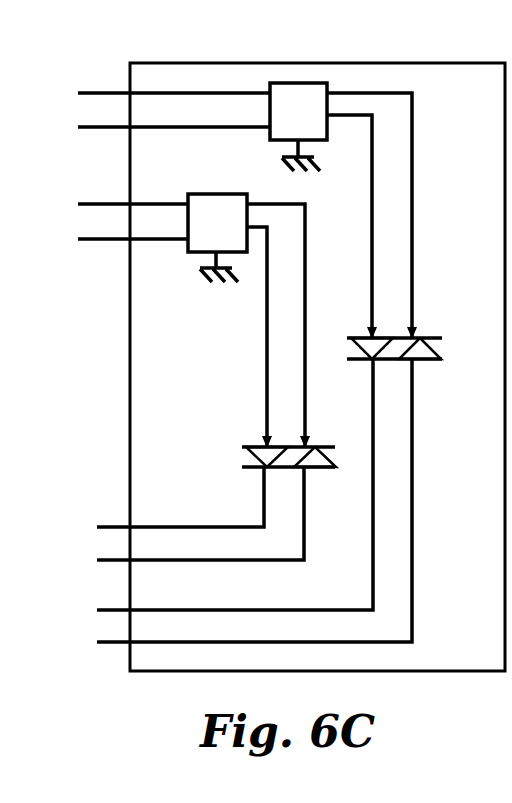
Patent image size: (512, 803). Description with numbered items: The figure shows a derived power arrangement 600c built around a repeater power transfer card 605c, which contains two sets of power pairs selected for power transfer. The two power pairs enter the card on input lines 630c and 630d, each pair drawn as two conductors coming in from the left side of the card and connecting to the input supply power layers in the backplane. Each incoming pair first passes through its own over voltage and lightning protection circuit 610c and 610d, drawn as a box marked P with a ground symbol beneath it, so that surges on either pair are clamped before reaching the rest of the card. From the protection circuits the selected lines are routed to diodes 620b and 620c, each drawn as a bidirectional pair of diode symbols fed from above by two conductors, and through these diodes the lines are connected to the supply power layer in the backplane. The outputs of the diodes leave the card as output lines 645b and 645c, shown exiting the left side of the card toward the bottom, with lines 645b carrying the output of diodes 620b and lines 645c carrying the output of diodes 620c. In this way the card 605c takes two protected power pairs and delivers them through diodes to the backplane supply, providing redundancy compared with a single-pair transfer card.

The power converter circuit 600c is at (184, 53).
The repeater power transfer card 605c is at (370, 62).
The over voltage and lightning protection circuit 610c is at (266, 140).
The over voltage and lightning protection circuit 610d is at (188, 252).
The diode 620b is at (240, 453).
The diode 620c is at (442, 352).
The lines 630c is at (78, 105).
The lines 630d is at (80, 228).
The first output terminals 645b is at (92, 542).
The second output terminals 645c is at (93, 628).